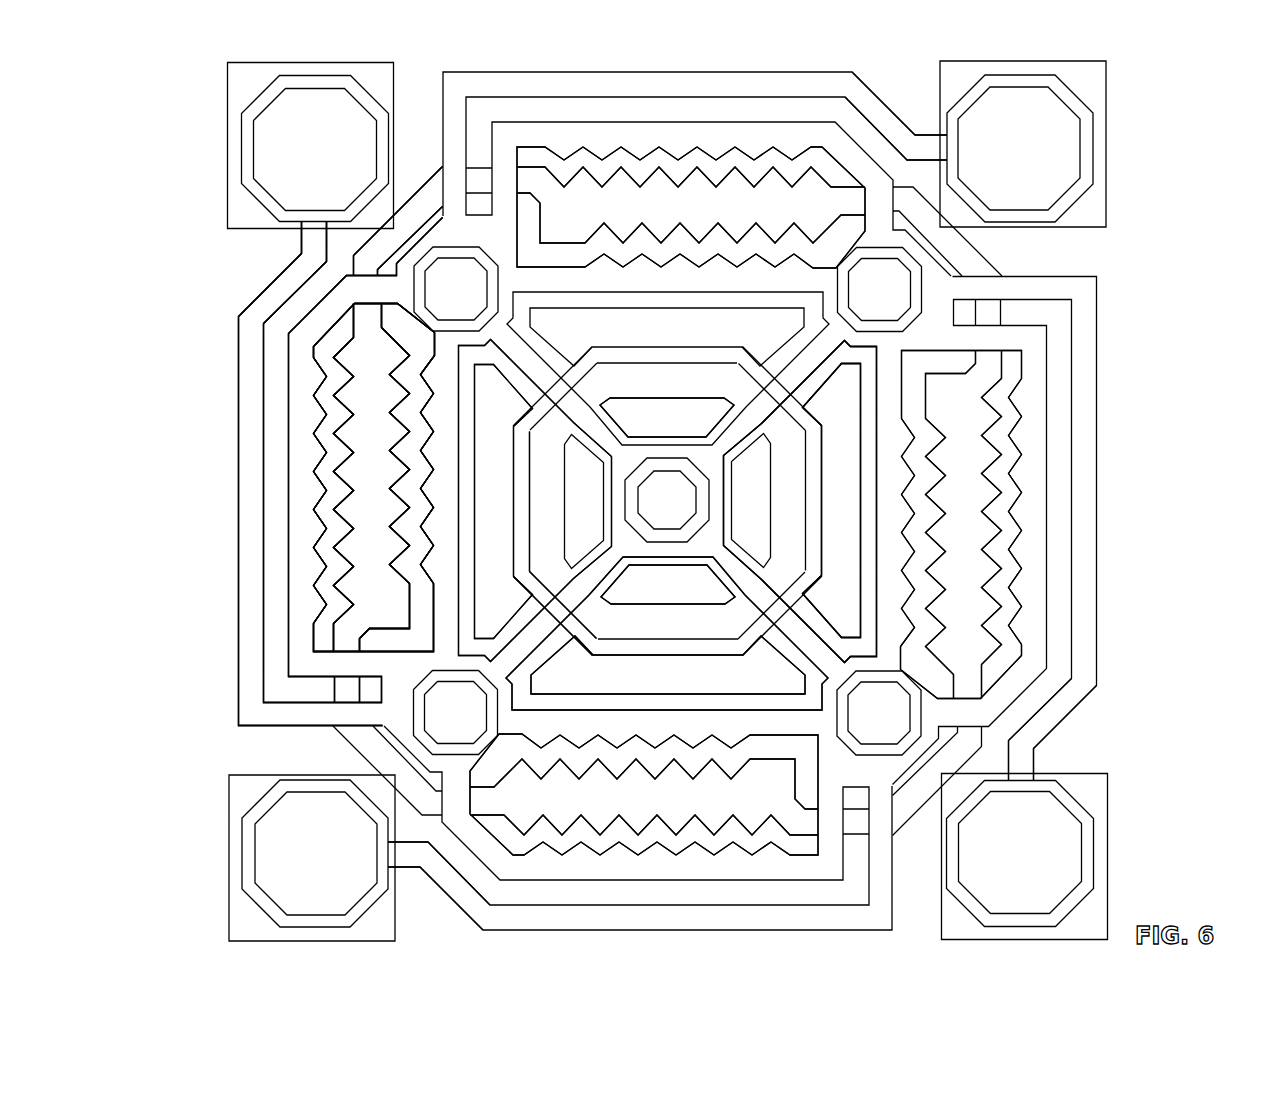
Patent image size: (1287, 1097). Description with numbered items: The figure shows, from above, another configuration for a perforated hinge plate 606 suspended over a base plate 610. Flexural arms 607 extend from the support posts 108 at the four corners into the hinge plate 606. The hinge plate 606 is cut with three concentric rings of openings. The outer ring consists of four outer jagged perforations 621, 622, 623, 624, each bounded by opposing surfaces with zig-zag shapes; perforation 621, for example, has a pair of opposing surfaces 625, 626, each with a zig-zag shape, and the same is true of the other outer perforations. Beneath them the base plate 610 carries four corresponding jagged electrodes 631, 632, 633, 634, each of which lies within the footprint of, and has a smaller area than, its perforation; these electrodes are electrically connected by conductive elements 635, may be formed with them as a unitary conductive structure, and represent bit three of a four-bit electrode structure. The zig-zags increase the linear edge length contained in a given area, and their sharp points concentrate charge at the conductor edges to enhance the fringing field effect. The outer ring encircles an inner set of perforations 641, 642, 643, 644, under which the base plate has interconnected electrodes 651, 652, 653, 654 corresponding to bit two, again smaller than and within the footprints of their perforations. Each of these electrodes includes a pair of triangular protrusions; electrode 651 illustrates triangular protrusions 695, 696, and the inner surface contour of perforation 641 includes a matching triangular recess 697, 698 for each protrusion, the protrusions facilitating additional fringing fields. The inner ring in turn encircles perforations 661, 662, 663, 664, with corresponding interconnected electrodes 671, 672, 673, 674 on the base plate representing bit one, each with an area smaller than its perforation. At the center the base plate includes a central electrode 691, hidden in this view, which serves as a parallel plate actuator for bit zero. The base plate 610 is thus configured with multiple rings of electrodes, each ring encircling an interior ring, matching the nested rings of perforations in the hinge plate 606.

The support posts 108 is at (246, 160).
The hinge plate 606 is at (258, 294).
The flexural arms 607 is at (663, 78).
The base plate 610 is at (288, 347).
The outer jagged perforation 621 is at (340, 457).
The outer jagged perforation 622 is at (545, 150).
The outer jagged perforation 623 is at (1025, 620).
The outer jagged perforation 624 is at (790, 850).
The opposing surface 625 is at (323, 398).
The opposing surface 626 is at (317, 427).
The jagged electrode 631 is at (370, 487).
The jagged electrode 632 is at (662, 188).
The jagged electrode 633 is at (990, 567).
The jagged electrode 634 is at (690, 820).
The conductive elements 635 is at (375, 250).
The inner perforation 641 is at (485, 487).
The inner perforation 642 is at (650, 302).
The inner perforation 643 is at (765, 465).
The inner perforation 644 is at (690, 687).
The electrode 651 is at (563, 508).
The electrode 652 is at (690, 318).
The electrode 653 is at (855, 540).
The electrode 654 is at (645, 682).
The perforation 661 is at (556, 608).
The perforation 662 is at (693, 390).
The perforation 663 is at (875, 425).
The perforation 664 is at (640, 612).
The electrode 671 is at (532, 598).
The electrode 672 is at (832, 410).
The electrode 673 is at (865, 460).
The electrode 674 is at (890, 650).
The central electrode 691 is at (648, 515).
The triangular protrusion 695 is at (600, 430).
The triangular protrusion 696 is at (600, 605).
The triangular recess 697 is at (422, 427).
The triangular recess 698 is at (548, 597).